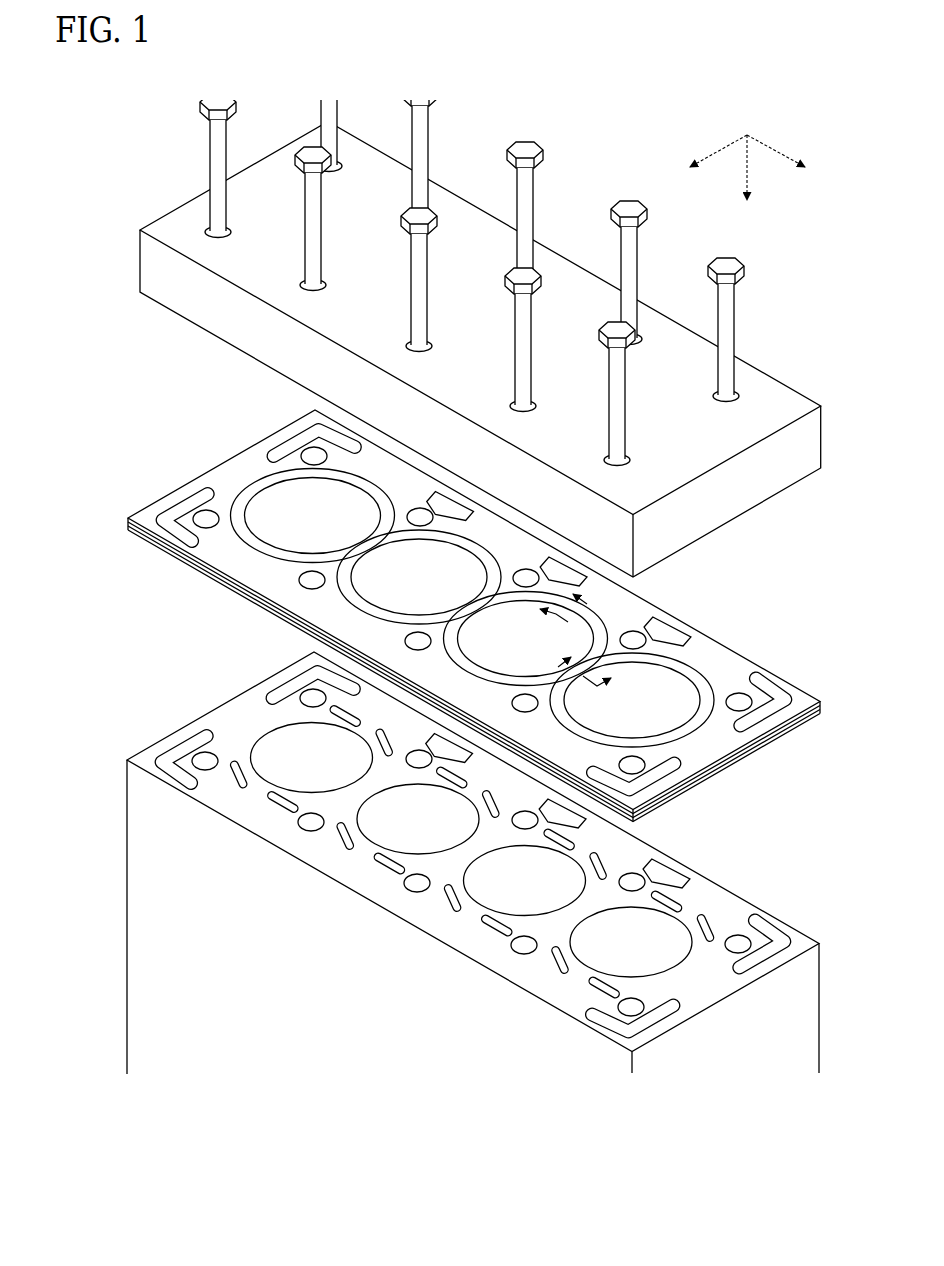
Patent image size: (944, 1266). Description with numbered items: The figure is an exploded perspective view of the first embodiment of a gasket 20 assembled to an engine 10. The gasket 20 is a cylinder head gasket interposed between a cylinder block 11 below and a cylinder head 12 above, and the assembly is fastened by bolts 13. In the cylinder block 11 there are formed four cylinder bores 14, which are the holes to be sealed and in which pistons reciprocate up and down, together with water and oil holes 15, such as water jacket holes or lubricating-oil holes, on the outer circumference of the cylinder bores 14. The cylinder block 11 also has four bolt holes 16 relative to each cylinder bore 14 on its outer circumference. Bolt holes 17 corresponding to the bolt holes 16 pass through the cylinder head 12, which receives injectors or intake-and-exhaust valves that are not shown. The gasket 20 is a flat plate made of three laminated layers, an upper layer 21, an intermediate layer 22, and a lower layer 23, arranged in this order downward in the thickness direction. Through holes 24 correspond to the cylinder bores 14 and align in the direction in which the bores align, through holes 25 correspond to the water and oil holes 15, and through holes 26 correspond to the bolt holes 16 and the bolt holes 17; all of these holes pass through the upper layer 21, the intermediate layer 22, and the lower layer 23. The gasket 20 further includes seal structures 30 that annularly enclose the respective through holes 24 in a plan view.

The engine 10 is at (578, 180).
The cylinder block 11 is at (236, 697).
The cylinder head 12 is at (203, 195).
The bolts 13 is at (636, 207).
The cylinder bores 14 is at (324, 768).
The water and oil holes 15 is at (180, 738).
The bolt holes 16 is at (210, 751).
The bolt holes 17 is at (231, 240).
The gasket 20 is at (233, 444).
The upper layer 21 is at (760, 751).
The intermediate layer 22 is at (726, 768).
The lower layer 23 is at (684, 793).
The through holes 24 is at (325, 526).
The through holes 25 is at (673, 630).
The through holes 26 is at (634, 631).
The seal structures 30 is at (692, 667).